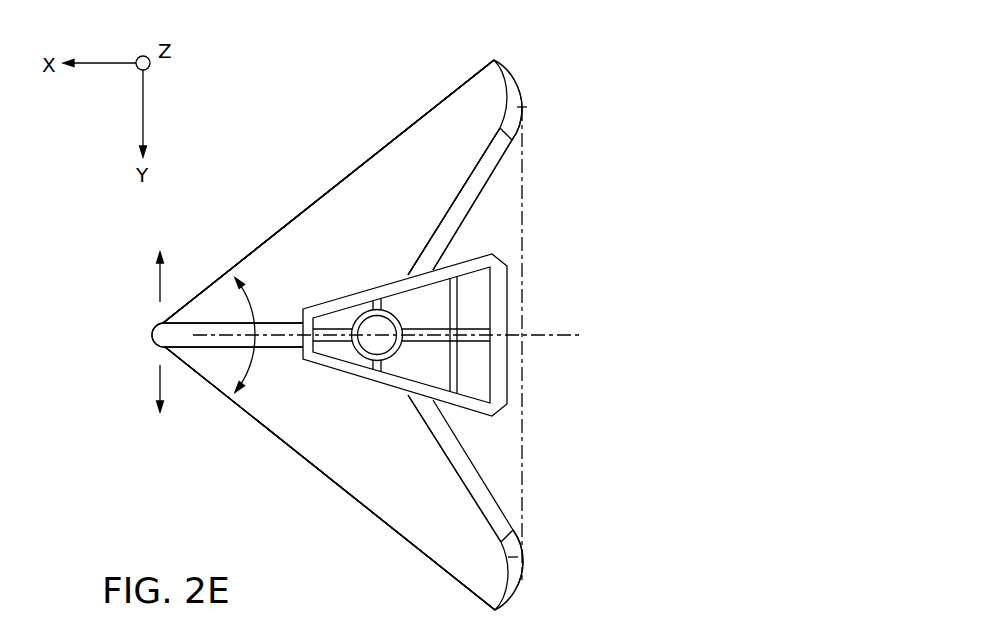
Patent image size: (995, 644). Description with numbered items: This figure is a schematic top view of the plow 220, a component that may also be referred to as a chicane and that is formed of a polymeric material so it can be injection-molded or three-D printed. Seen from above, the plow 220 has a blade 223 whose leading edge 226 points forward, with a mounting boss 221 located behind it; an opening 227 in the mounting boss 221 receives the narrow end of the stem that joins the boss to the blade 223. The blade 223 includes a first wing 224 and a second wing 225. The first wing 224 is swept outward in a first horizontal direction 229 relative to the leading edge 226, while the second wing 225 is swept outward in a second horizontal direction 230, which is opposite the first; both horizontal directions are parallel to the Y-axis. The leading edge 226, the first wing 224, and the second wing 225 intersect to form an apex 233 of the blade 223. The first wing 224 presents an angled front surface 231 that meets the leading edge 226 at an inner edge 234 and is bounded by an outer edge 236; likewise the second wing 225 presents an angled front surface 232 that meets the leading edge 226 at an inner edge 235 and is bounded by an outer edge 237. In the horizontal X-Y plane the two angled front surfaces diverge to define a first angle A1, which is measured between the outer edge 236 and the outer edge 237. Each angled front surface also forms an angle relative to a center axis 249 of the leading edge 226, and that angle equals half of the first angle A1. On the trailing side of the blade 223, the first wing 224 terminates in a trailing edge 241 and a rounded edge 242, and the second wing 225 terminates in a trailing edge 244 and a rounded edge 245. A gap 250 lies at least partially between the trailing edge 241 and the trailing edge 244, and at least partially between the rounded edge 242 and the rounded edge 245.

The plow 220 is at (593, 53).
The mounting boss 221 is at (510, 303).
The blade 223 is at (362, 88).
The first wing 224 is at (277, 227).
The second wing 225 is at (272, 433).
The leading edge 226 is at (165, 325).
The opening 227 is at (378, 345).
The first horizontal direction 229 is at (160, 285).
The second horizontal direction 230 is at (157, 378).
The angled front surface 231 is at (440, 133).
The angled front surface 232 is at (435, 515).
The apex 233 is at (161, 339).
The inner edge 234 is at (292, 322).
The inner edge 235 is at (293, 350).
The outer edge 236 is at (340, 178).
The outer edge 237 is at (340, 488).
The trailing edge 241 is at (477, 181).
The rounded edge 242 is at (522, 107).
The trailing edge 244 is at (480, 488).
The rounded edge 245 is at (513, 557).
The center axis 249 is at (556, 338).
The gap 250 is at (500, 226).
The first angle A1 is at (253, 362).